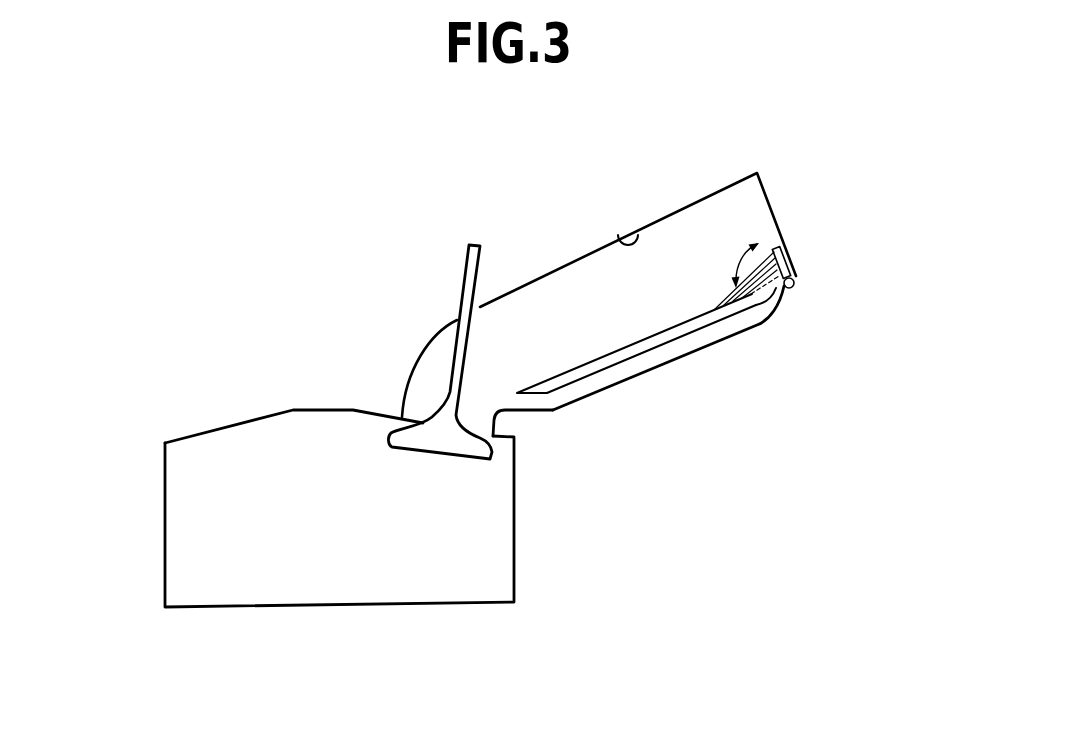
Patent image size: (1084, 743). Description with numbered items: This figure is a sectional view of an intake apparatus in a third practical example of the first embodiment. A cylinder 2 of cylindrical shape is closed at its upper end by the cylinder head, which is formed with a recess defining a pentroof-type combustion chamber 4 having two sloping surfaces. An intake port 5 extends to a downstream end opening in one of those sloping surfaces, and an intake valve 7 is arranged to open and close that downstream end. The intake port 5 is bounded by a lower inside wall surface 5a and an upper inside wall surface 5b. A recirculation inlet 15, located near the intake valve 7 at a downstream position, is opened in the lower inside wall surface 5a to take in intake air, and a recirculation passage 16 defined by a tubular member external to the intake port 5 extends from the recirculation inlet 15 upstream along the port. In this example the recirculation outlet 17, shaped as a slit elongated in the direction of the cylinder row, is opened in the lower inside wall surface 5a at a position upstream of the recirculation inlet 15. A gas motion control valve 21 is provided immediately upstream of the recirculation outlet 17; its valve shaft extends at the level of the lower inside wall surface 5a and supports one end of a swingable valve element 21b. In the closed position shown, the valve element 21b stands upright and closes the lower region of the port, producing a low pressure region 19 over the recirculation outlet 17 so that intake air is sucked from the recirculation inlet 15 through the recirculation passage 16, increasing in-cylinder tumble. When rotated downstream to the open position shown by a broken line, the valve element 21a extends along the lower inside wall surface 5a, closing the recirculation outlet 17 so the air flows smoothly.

The cylinder 2 is at (166, 541).
The combustion chamber 4 is at (238, 440).
The intake port 5 is at (580, 288).
The lower inside wall surface 5a is at (576, 365).
The upper inside wall surface 5b is at (635, 230).
The intake valve 7 is at (438, 447).
The recirculation inlet 15 is at (517, 400).
The recirculation passage 16 is at (682, 343).
The recirculation outlet 17 is at (762, 302).
The low pressure region 19 is at (733, 286).
The gas motion control valve 21 is at (767, 237).
The valve element 21a is at (794, 284).
The valve element 21b is at (779, 251).